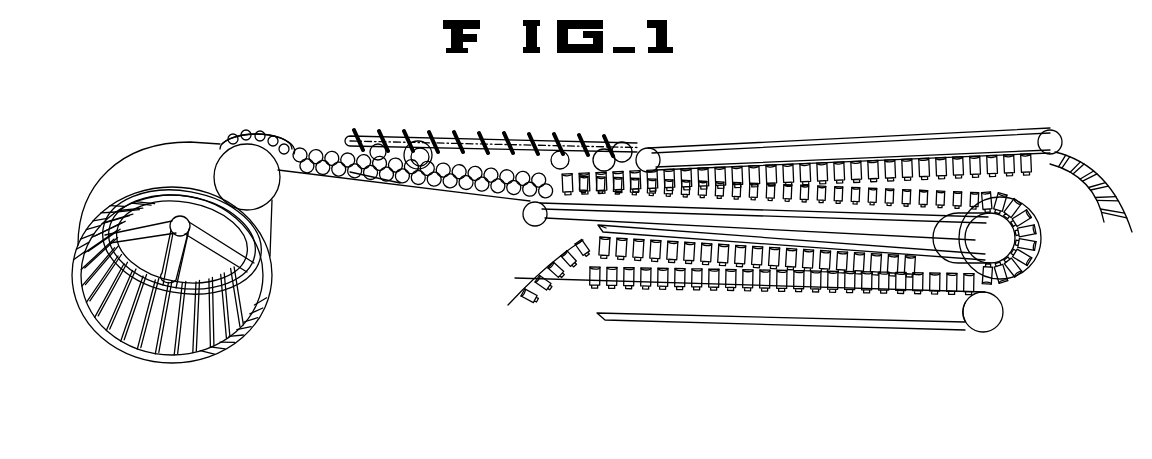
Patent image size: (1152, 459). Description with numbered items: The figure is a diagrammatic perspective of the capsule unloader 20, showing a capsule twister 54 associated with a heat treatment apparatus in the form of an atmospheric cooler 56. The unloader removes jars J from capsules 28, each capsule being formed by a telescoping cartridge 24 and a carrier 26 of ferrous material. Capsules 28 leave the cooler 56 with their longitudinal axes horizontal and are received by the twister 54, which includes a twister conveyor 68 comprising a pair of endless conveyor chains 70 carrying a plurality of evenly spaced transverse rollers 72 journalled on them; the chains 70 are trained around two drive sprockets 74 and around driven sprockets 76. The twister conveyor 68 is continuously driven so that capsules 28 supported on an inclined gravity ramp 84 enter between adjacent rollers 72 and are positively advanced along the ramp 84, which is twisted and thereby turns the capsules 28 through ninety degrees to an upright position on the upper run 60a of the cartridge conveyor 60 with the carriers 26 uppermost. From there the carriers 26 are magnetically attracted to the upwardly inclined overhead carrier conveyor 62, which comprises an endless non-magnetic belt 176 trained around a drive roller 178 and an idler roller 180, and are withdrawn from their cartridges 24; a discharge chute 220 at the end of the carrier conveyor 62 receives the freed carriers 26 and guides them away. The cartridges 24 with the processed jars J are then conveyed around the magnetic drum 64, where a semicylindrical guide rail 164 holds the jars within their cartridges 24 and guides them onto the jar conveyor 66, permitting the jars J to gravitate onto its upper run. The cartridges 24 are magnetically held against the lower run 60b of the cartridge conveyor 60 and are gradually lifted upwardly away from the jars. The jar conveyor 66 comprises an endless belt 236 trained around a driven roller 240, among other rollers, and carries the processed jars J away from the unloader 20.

The capsule unloader 20 is at (880, 55).
The cartridge 24 is at (540, 300).
The carrier 26 is at (903, 170).
The capsule 28 is at (328, 148).
The capsule twister 54 is at (491, 116).
The atmospheric cooler 56 is at (117, 169).
The cartridge conveyor 60 is at (714, 230).
The upper run of cartridge conveyor 60a is at (735, 200).
The lower run of cartridge conveyor 60b is at (557, 225).
The carrier conveyor 62 is at (849, 125).
The magnetic drum 64 is at (1003, 249).
The jar conveyor 66 is at (577, 288).
The twister conveyor 68 is at (560, 140).
The endless conveyor chains 70 is at (430, 145).
The transverse rollers 72 is at (548, 136).
The drive sprockets 74 is at (625, 146).
The driven sprockets 76 is at (380, 146).
The inclined gravity ramp 84 is at (375, 182).
The semicylindrical guide rail 164 is at (1028, 267).
The endless non-magnetic belt 176 is at (758, 134).
The drive roller 178 is at (1052, 134).
The idler roller 180 is at (661, 153).
The discharge chute 220 is at (1113, 184).
The endless belt 236 is at (920, 327).
The driven roller 240 is at (1003, 315).
The jars J is at (778, 284).